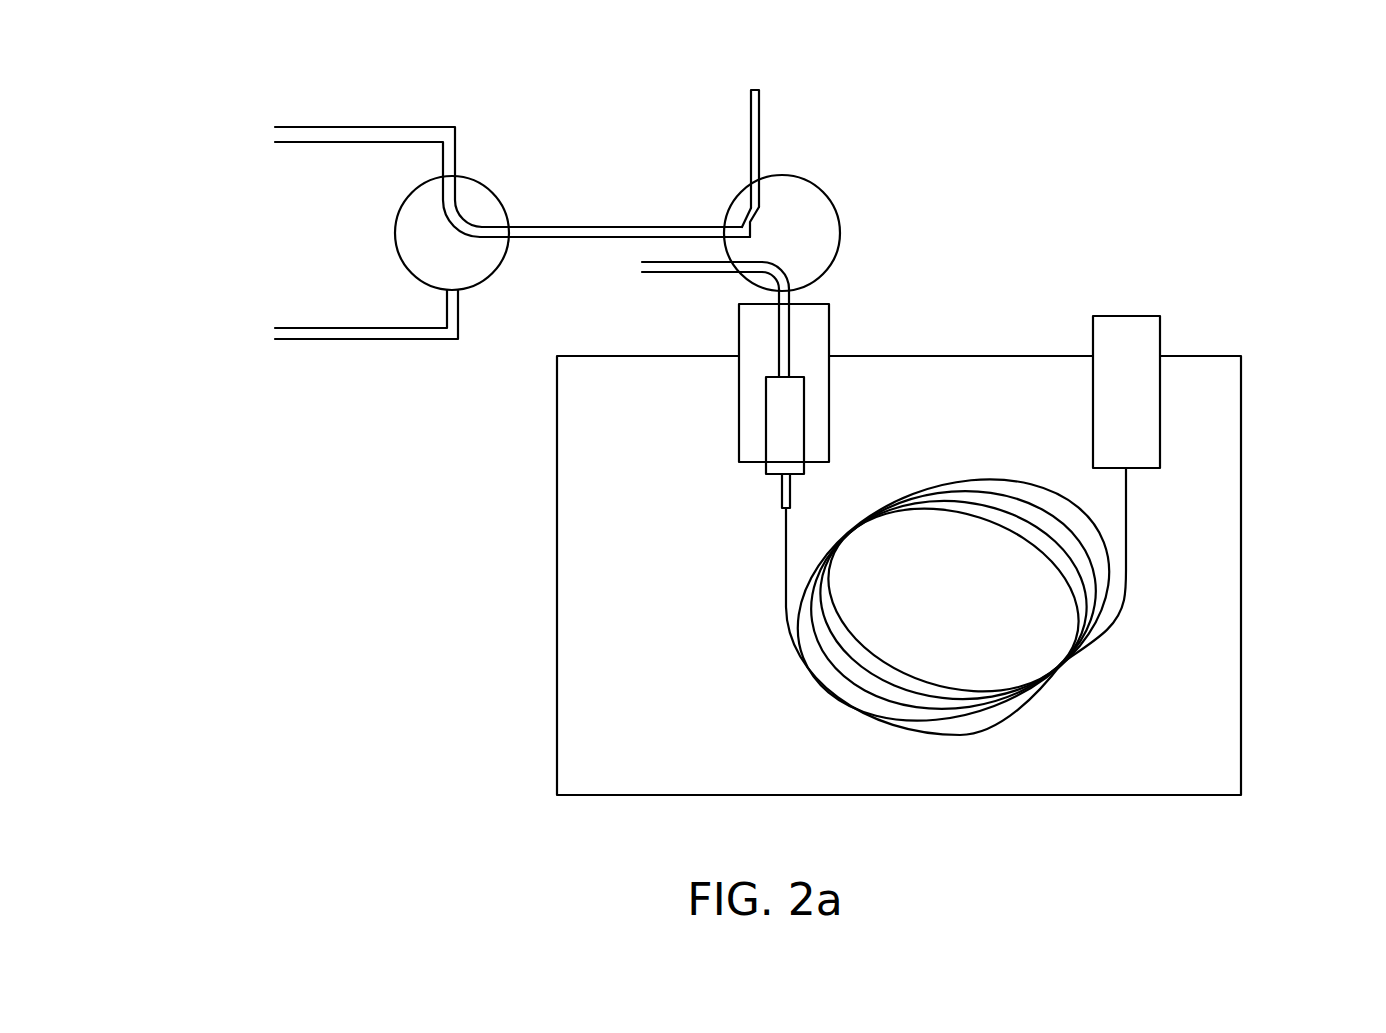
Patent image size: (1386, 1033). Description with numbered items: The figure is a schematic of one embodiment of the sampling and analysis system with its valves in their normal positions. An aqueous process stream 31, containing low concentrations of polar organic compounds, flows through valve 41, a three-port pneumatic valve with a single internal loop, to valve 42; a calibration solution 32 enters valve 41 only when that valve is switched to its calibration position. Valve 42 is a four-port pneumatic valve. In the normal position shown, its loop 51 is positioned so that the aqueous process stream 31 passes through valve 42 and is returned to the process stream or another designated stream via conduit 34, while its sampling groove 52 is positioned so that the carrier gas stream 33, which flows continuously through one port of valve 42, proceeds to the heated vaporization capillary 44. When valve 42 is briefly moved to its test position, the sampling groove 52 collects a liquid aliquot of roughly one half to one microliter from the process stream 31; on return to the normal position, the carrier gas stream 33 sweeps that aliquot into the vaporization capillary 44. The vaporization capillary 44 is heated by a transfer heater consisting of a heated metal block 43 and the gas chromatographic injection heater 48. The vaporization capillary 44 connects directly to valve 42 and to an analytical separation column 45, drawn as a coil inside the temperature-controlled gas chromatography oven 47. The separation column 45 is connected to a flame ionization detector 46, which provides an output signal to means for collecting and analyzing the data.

The aqueous process stream 31 is at (267, 135).
The calibration solution 32 is at (275, 335).
The carrier gas stream 33 is at (628, 262).
The conduit 34 is at (755, 80).
The valve 41 is at (488, 190).
The valve 42 is at (812, 180).
The heated metal block 43 is at (829, 397).
The vaporization capillary 44 is at (790, 330).
The analytical separation column 45 is at (812, 683).
The flame ionization detector 46 is at (1128, 312).
The gas chromatography oven 47 is at (1242, 408).
The gas chromatographic injection heater 48 is at (766, 428).
The loop 51 is at (747, 213).
The sampling groove 52 is at (748, 282).